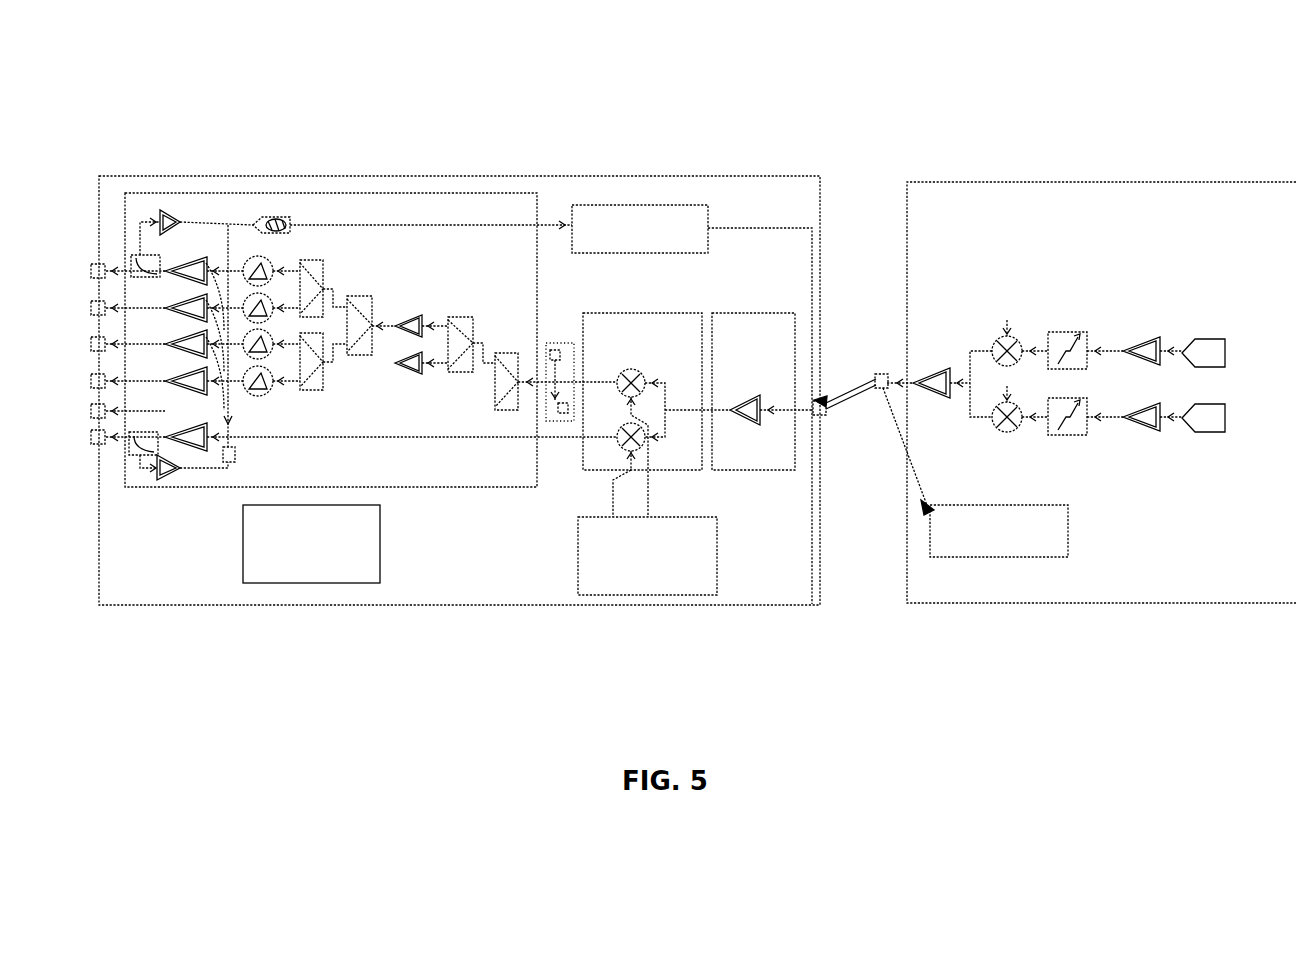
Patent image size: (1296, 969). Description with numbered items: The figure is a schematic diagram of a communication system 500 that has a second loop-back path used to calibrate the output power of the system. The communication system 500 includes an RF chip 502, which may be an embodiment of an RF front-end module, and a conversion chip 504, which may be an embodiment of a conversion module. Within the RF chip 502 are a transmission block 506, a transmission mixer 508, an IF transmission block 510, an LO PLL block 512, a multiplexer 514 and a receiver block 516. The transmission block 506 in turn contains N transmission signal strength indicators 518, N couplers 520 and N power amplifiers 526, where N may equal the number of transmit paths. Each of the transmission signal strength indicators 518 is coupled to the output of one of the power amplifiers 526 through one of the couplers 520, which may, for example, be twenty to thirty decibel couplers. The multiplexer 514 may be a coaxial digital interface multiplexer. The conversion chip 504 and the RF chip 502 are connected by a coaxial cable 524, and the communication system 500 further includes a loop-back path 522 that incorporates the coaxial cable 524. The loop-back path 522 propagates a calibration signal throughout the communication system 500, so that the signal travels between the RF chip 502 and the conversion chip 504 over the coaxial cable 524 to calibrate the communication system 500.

The communication system 500 is at (1263, 64).
The RF chip 502 is at (515, 176).
The conversion chip 504 is at (1097, 182).
The transmission block 506 is at (391, 340).
The transmission mixer 508 is at (656, 415).
The IF transmission block 510 is at (762, 391).
The LO PLL block 512 is at (647, 556).
The multiplexer 514 is at (665, 255).
The receiver block 516 is at (311, 544).
The transmission signal strength indicator 518 is at (178, 215).
The coupler 520 is at (160, 254).
The loop-back path 522 is at (232, 255).
The coaxial cable 524 is at (853, 385).
The power amplifier 526 is at (232, 425).